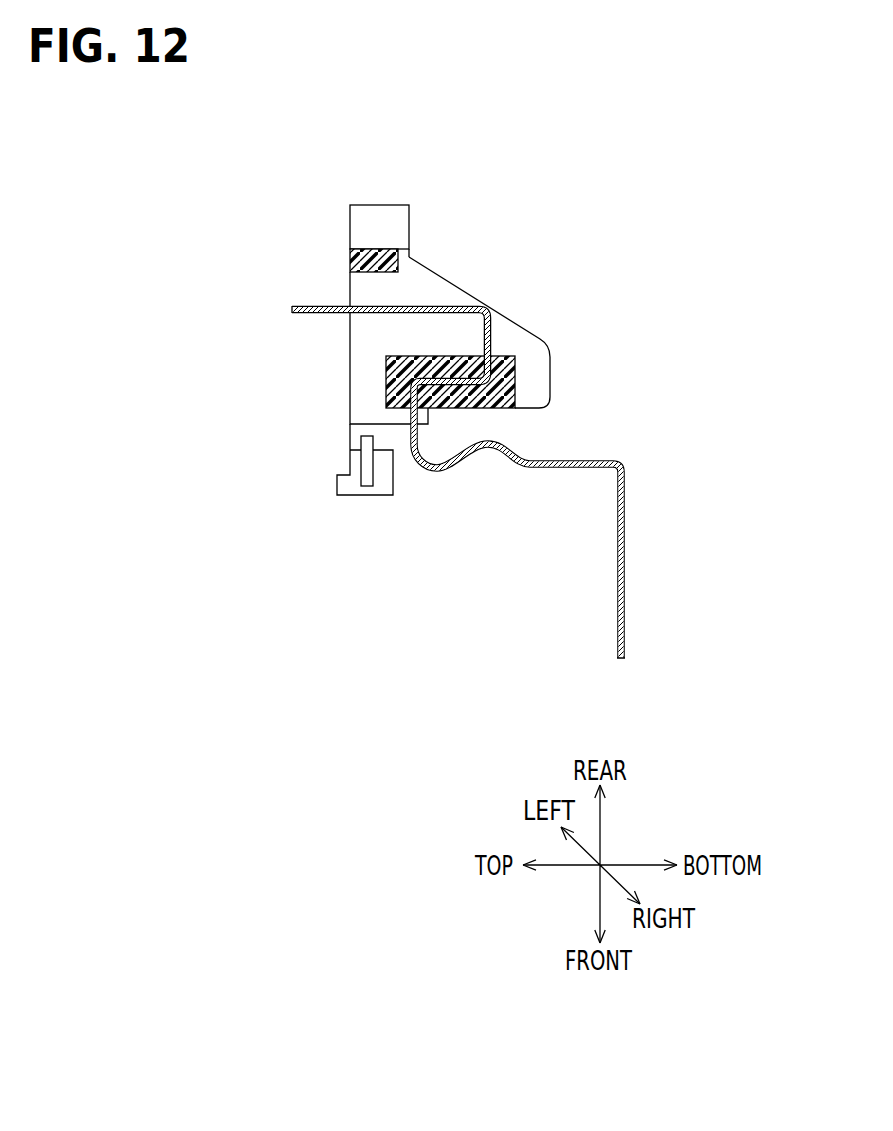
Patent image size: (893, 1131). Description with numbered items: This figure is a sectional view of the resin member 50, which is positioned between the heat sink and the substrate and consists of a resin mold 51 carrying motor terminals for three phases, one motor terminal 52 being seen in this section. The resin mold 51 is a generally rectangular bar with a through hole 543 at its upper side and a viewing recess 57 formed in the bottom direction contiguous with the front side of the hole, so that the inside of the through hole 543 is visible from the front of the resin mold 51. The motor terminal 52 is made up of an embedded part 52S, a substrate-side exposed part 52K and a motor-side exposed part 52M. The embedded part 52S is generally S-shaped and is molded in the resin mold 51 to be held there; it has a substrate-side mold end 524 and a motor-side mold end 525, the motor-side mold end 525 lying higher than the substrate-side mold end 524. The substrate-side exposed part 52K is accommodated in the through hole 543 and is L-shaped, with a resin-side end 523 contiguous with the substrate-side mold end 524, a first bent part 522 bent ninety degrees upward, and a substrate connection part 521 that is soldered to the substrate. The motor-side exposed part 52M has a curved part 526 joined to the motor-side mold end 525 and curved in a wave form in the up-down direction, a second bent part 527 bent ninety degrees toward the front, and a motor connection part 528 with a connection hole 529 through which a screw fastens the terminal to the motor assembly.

The resin member 50 is at (312, 514).
The resin mold 51 is at (378, 222).
The through hole 543 is at (378, 290).
The viewing recess 57 is at (386, 370).
The motor terminal 52 is at (611, 650).
The substrate connection part 521 is at (292, 310).
The substrate-side exposed part 52K is at (436, 306).
The first bent part 522 is at (484, 306).
The resin-side end 523 is at (491, 352).
The substrate-side mold end 524 is at (510, 362).
The motor-side mold end 525 is at (386, 400).
The curved part 526 is at (433, 474).
The motor-side exposed part 52M is at (522, 470).
The second bent part 527 is at (615, 472).
The motor connection part 528 is at (626, 517).
The connection hole 529 is at (626, 600).
The embedded part 52S is at (512, 392).